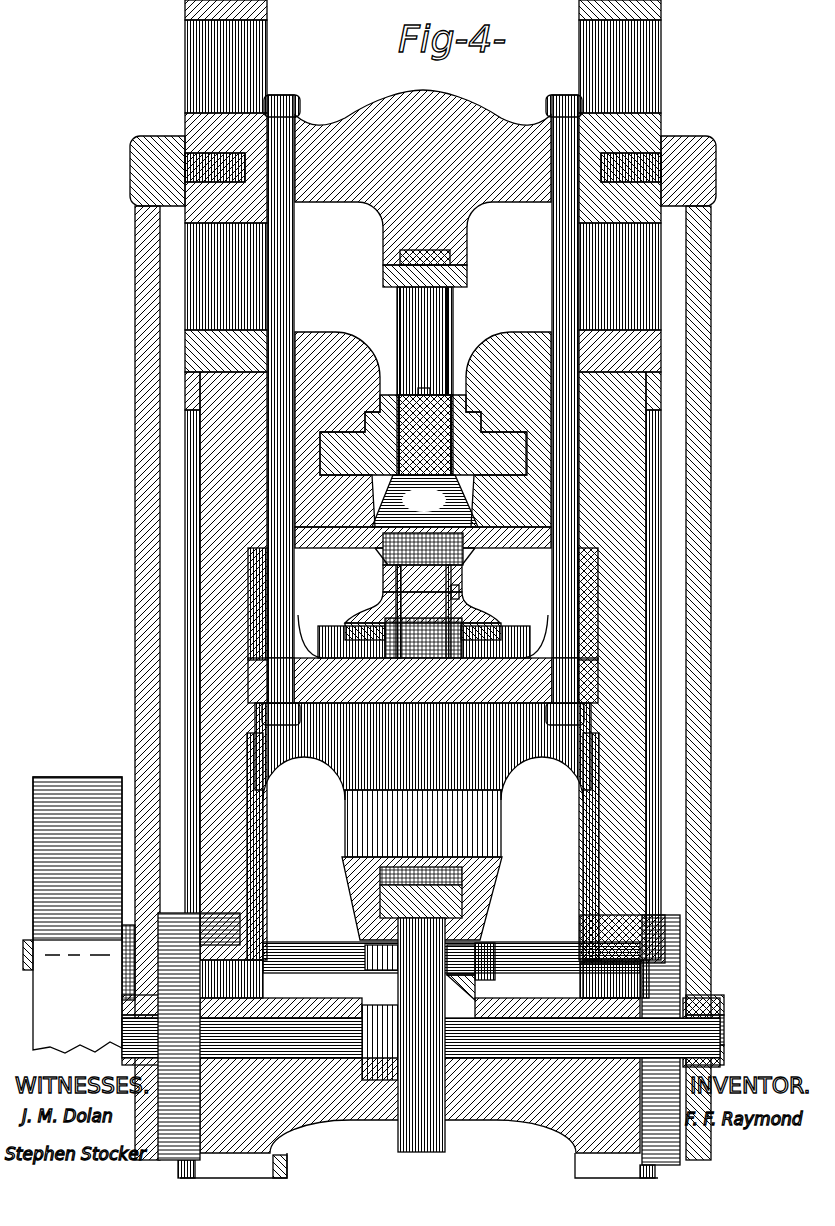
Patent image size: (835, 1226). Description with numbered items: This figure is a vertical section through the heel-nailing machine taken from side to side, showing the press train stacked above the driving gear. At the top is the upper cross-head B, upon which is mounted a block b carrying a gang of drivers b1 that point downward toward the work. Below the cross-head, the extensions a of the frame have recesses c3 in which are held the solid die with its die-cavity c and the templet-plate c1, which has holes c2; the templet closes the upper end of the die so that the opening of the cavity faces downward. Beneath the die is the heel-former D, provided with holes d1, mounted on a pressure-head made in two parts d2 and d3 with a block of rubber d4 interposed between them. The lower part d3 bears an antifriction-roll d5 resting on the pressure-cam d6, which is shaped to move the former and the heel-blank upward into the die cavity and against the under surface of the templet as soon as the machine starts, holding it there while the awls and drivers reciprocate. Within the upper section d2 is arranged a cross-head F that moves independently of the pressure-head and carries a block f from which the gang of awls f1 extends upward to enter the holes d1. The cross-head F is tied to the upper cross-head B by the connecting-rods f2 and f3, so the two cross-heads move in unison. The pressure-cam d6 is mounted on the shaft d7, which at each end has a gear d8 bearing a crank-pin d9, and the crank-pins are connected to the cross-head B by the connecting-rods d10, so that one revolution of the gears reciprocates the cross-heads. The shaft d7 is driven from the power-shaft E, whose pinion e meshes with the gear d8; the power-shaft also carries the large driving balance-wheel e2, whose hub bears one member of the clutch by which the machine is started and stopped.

The upper cross-head B is at (423, 177).
The block b is at (467, 276).
The gang of drivers b1 is at (458, 340).
The extensions of the frame a is at (352, 336).
The templet-plate c1 is at (373, 445).
The holes c2 is at (450, 400).
The die-cavity c is at (425, 501).
The recesses c3 is at (300, 548).
The pin g is at (424, 382).
The heel-former D is at (383, 580).
The holes d1 is at (350, 604).
The cross-head F is at (427, 700).
The block f is at (407, 662).
The gang of awls f1 is at (459, 590).
The connecting-rod f2 is at (294, 282).
The connecting-rod f3 is at (552, 258).
The connecting-rods d10 is at (740, 590).
The upper part of pressure-head d2 is at (423, 823).
The antifriction-roll d5 is at (365, 930).
The block of rubber d4 is at (500, 878).
The lower part of pressure-head d3 is at (465, 905).
The power-shaft E is at (336, 962).
The shaft d7 is at (522, 1060).
The crank-pin d9 is at (748, 1022).
The pressure-cam d6 is at (398, 1128).
The gear d8 is at (172, 912).
The pinion e is at (79, 915).
The driving balance-wheel e2 is at (77, 960).